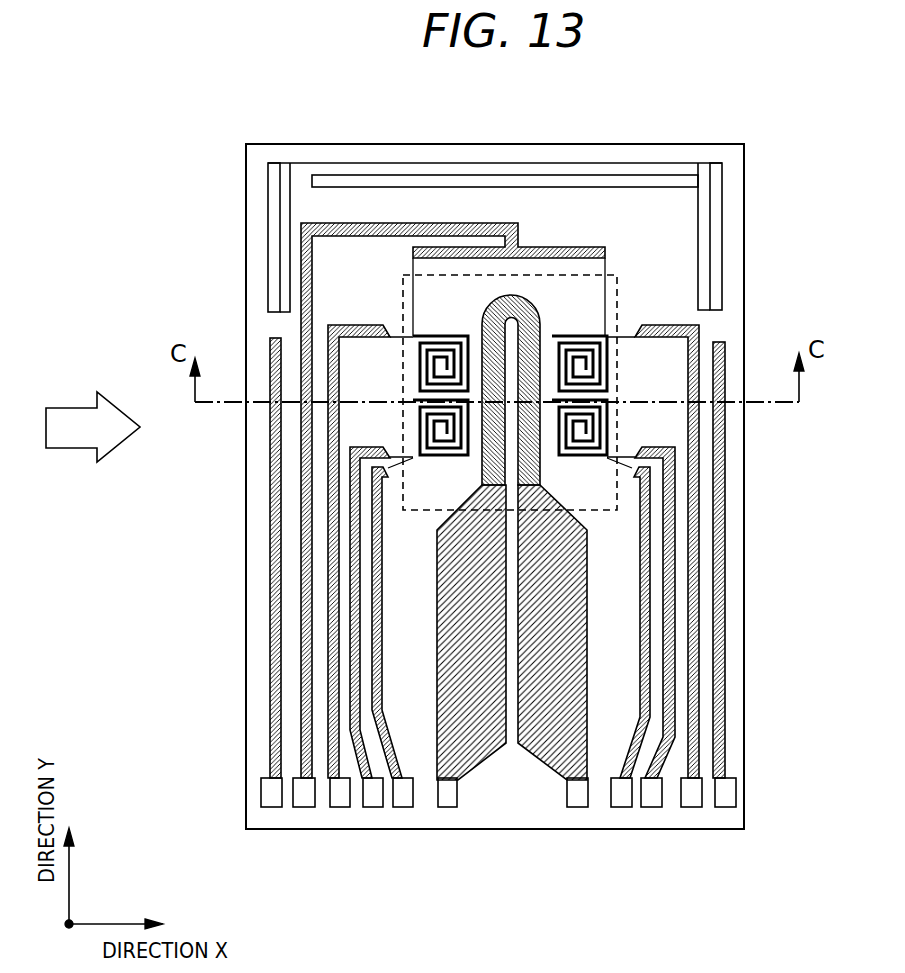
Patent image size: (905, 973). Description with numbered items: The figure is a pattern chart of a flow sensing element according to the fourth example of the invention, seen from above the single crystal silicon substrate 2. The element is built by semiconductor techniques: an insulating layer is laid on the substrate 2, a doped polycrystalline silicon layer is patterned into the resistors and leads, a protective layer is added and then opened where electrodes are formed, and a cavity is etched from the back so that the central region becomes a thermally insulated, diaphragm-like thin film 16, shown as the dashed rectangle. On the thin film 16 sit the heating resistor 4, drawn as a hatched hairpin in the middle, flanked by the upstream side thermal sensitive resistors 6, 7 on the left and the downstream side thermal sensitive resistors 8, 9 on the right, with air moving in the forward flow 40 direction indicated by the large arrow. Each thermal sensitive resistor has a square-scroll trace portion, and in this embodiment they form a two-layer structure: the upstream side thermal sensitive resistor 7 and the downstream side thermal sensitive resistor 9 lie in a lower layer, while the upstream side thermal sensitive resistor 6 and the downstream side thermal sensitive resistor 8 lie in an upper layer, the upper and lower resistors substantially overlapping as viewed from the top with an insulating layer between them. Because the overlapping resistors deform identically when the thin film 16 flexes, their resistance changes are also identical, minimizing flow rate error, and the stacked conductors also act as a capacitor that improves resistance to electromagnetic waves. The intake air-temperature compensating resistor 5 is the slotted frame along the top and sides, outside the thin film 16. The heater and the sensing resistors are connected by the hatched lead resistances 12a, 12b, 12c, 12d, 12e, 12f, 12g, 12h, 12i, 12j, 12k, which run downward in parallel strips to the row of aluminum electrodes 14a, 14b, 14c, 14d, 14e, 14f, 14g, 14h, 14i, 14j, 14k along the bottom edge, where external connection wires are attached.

The single crystal silicon substrate 2 is at (297, 150).
The heating resistor 4 is at (522, 302).
The intake air-temperature compensating resistor 5 is at (655, 174).
The upstream side thermal sensitive resistor 6 is at (440, 362).
The upstream side thermal sensitive resistor 7 is at (440, 430).
The downstream side thermal sensitive resistor 8 is at (575, 365).
The downstream side thermal sensitive resistor 9 is at (575, 430).
The thin film 16 is at (460, 288).
The forward flow 40 is at (80, 413).
The lead resistance 12a is at (274, 462).
The lead resistance 12b is at (302, 526).
The lead resistance 12c is at (332, 576).
The lead resistance 12d is at (354, 630).
The lead resistance 12e is at (376, 682).
The lead resistance 12f is at (442, 718).
The lead resistance 12g is at (562, 655).
The lead resistance 12h is at (648, 583).
The lead resistance 12i is at (668, 523).
The lead resistance 12j is at (697, 490).
The lead resistance 12k is at (730, 440).
The electrode 14a is at (272, 800).
The electrode 14b is at (305, 800).
The electrode 14c is at (340, 800).
The electrode 14d is at (373, 800).
The electrode 14e is at (404, 800).
The electrode 14f is at (448, 800).
The electrode 14g is at (578, 800).
The electrode 14h is at (622, 800).
The electrode 14i is at (652, 800).
The electrode 14j is at (692, 800).
The electrode 14k is at (726, 800).